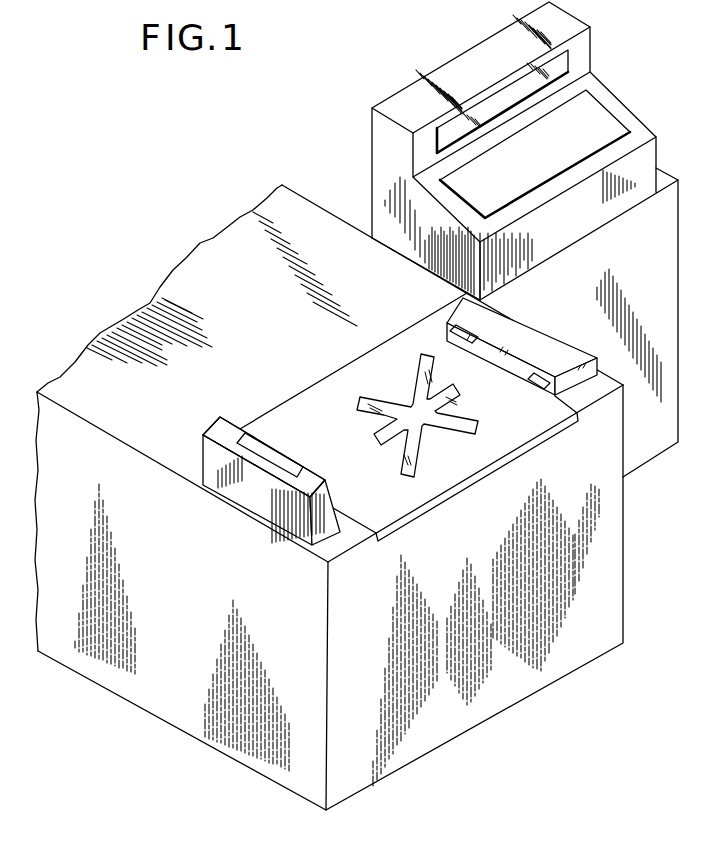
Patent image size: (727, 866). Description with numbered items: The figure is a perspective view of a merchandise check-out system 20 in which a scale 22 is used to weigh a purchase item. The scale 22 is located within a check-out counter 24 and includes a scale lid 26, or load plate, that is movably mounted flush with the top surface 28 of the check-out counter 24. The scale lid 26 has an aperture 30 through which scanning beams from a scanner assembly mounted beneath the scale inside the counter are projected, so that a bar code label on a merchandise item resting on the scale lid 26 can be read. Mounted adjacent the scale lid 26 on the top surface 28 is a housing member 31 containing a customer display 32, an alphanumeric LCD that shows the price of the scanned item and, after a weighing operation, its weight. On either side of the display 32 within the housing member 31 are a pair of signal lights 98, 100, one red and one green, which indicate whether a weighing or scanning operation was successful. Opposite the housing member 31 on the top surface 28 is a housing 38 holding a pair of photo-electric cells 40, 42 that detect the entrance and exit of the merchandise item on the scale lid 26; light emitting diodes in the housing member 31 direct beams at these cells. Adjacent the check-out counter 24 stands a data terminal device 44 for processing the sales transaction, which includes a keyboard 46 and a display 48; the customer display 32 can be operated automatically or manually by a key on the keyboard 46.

The merchandise check-out system 20 is at (313, 158).
The scale 22 is at (313, 378).
The check-out counter 24 is at (605, 566).
The scale lid 26 is at (408, 506).
The top surface 28 is at (125, 332).
The aperture 30 is at (462, 413).
The housing member 31 is at (244, 486).
The customer display 32 is at (220, 487).
The housing 38 is at (534, 343).
The photo-electric cell 40 is at (470, 328).
The photo-electric cell 42 is at (548, 364).
The data terminal device 44 is at (539, 239).
The keyboard 46 is at (590, 110).
The display 48 is at (560, 63).
The signal light 98 is at (222, 432).
The signal light 100 is at (296, 500).